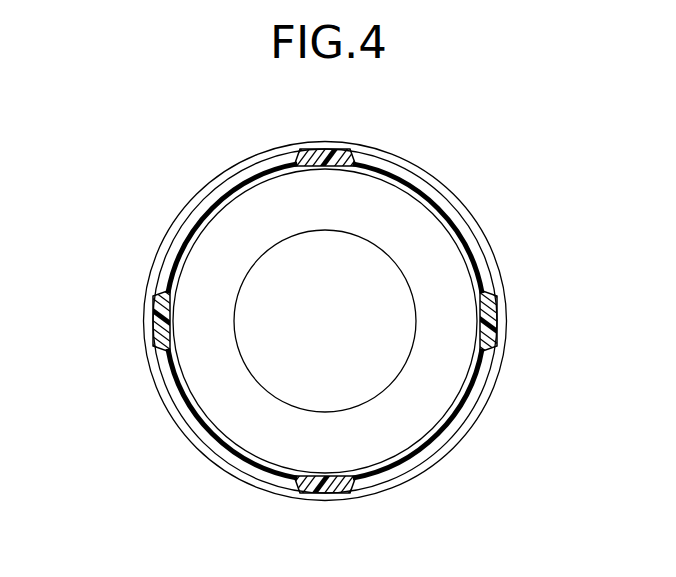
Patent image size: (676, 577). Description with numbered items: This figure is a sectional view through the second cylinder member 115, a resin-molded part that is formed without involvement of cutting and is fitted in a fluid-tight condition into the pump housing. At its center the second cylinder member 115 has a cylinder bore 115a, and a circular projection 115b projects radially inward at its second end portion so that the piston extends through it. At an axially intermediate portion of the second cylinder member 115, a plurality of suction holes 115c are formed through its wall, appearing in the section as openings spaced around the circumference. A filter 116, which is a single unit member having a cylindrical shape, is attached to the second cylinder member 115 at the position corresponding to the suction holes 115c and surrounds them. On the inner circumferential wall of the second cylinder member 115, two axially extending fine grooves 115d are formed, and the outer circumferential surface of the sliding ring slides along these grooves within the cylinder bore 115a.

The second cylinder member 115 is at (502, 384).
The cylinder bore 115a is at (278, 466).
The circular projection 115b is at (387, 228).
The suction holes 115c is at (444, 213).
The fine grooves 115d is at (172, 325).
The filter 116 is at (395, 167).